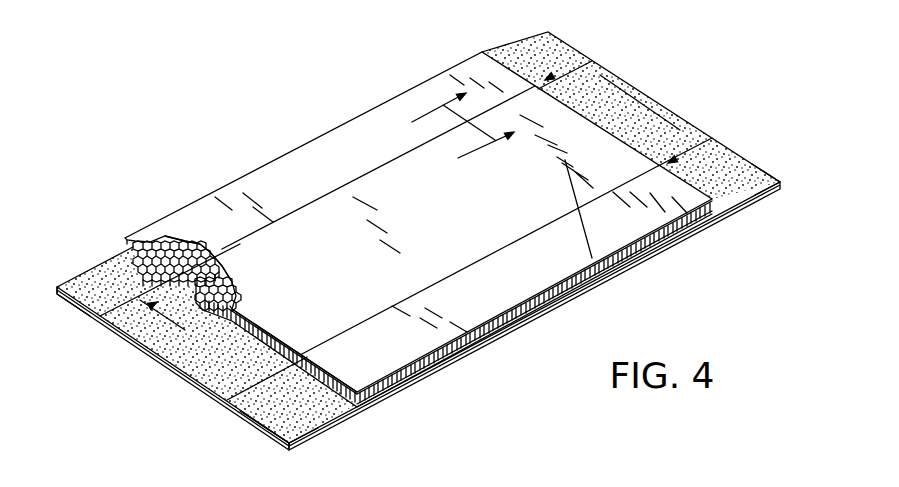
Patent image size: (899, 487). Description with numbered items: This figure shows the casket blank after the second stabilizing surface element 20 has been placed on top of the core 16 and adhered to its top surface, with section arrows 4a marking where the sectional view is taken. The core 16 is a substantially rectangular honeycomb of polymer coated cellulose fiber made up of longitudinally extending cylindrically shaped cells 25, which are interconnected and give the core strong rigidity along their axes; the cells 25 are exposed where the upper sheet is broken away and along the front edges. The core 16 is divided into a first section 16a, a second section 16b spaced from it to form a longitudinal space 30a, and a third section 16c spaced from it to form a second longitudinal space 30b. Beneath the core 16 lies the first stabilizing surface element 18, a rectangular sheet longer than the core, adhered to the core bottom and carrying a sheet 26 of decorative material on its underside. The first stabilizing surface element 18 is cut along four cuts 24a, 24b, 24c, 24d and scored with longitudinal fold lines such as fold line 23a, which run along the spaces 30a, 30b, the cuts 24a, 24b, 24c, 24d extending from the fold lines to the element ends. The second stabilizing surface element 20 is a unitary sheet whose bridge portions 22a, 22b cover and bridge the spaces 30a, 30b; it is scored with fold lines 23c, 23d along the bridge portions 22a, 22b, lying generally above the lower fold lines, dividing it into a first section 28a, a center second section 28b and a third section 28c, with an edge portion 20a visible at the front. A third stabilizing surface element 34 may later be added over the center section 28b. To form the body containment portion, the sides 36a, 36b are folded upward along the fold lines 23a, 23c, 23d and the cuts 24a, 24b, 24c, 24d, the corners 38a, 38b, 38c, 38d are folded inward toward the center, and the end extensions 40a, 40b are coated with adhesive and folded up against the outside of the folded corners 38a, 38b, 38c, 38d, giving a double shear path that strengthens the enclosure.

The section line 4a- 4a is at (445, 135).
The core 16 is at (563, 302).
The first section 16a is at (232, 277).
The second section 16b is at (181, 240).
The third section 16c is at (366, 402).
The first stabilizing surface element 18 is at (447, 358).
The second stabilizing surface element 20 is at (322, 135).
The top face sheet edge 20a is at (340, 377).
The bridge portion 22a is at (397, 305).
The bridge portion 22b is at (222, 260).
The fold line 23a is at (210, 243).
The fold line 23c is at (376, 173).
The fold line 23d is at (541, 231).
The cut 24a is at (581, 82).
The cut 24b is at (701, 152).
The cut 24c is at (222, 397).
The cut 24d is at (112, 318).
The cells 25 is at (515, 328).
The sheet of decorative material 26 is at (328, 430).
The first section 28a is at (681, 192).
The center second section 28b is at (579, 132).
The third section 28c is at (447, 78).
The longitudinal space 30a is at (670, 162).
The second longitudinal space 30b is at (547, 78).
The third stabilizing surface element 34 is at (235, 325).
The side 36a is at (261, 432).
The side 36b is at (60, 287).
The corner 38a is at (300, 427).
The corner 38b is at (745, 193).
The corner 38c is at (538, 42).
The corner 38d is at (104, 267).
The end extension 40a is at (163, 352).
The end extension 40b is at (659, 110).